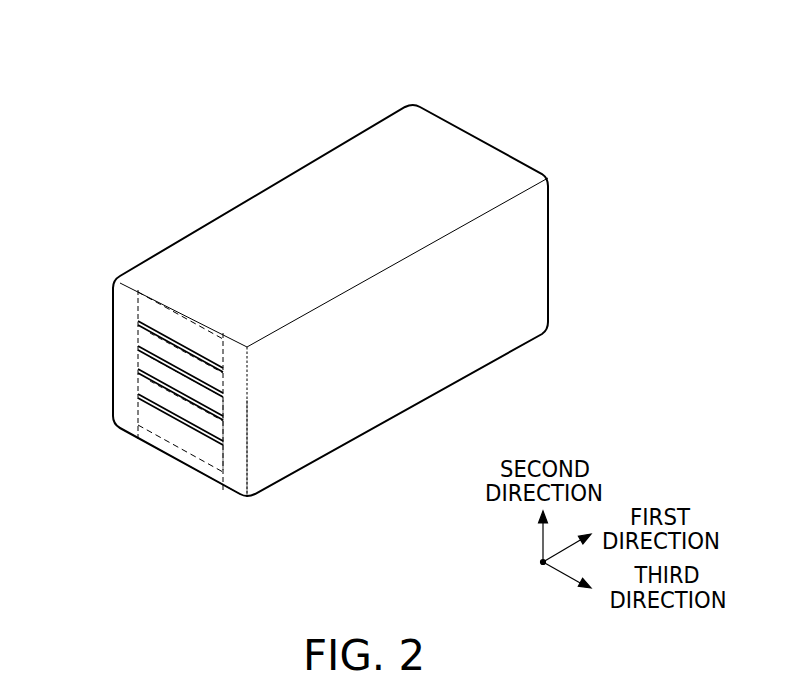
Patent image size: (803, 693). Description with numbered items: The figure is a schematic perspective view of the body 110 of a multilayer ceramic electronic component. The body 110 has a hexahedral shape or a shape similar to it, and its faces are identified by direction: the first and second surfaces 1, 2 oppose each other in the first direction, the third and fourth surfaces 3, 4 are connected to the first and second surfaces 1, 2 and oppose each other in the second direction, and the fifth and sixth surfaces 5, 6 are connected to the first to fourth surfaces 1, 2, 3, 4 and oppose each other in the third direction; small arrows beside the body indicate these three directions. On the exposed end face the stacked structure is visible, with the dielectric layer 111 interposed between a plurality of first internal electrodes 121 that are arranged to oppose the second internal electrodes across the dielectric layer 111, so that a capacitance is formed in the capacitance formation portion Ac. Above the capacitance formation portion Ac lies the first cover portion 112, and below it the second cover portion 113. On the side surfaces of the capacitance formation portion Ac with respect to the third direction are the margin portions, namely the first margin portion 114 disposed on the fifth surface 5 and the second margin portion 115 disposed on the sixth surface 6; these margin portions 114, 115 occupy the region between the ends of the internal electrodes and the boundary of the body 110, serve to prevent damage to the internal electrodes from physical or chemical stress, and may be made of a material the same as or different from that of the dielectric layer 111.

The body 110 is at (130, 46).
The first surface 1 is at (180, 456).
The second surface 2 is at (470, 136).
The third surface 3 is at (361, 176).
The fourth surface 4 is at (358, 414).
The fifth surface 5 is at (216, 219).
The sixth surface 6 is at (478, 327).
The dielectric layer 111 is at (142, 386).
The first cover portion 112 is at (140, 310).
The second cover portion 113 is at (141, 437).
The first margin portion 114 is at (124, 409).
The second margin portion 115 is at (235, 478).
The first internal electrode 121 is at (141, 338).
The capacitance formation portion Ac is at (226, 430).